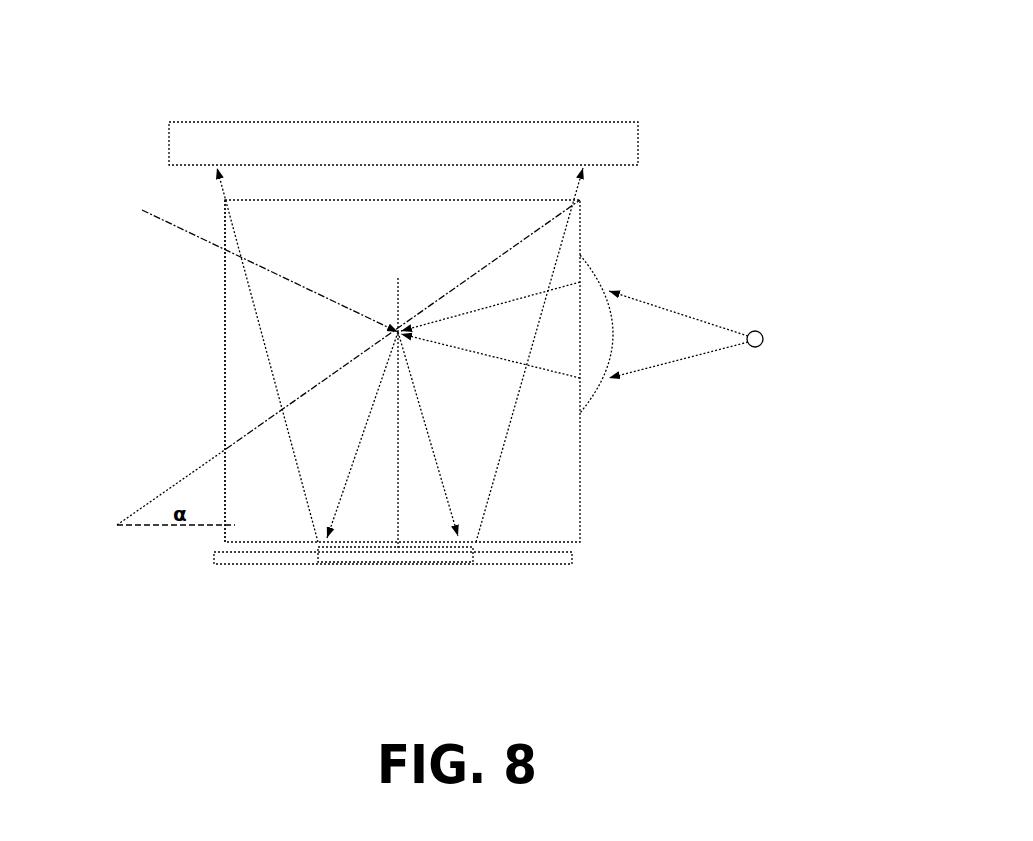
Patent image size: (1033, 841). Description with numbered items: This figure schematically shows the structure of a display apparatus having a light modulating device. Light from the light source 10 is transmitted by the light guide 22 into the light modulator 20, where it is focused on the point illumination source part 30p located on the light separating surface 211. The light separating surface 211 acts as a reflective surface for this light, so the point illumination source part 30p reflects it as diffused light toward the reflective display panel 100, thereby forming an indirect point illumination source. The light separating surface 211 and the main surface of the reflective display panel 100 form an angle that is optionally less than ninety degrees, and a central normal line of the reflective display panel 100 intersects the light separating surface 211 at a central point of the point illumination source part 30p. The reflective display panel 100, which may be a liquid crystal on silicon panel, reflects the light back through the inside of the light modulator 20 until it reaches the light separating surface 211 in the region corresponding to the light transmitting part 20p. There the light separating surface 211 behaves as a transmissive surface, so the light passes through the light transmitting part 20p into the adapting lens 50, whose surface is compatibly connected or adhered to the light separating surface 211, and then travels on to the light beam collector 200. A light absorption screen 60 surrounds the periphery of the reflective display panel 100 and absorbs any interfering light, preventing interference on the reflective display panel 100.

The light beam collector 200 is at (374, 143).
The light modulator 20 is at (625, 218).
The light transmitting part 20p is at (522, 245).
The point illumination source part 30p is at (248, 258).
The adapting lens 50 is at (235, 322).
The light separating surface 211 is at (313, 388).
The light source 10 is at (764, 339).
The light guide 22 is at (592, 387).
The reflective display panel 100 is at (421, 563).
The light absorption screen 60 is at (533, 564).